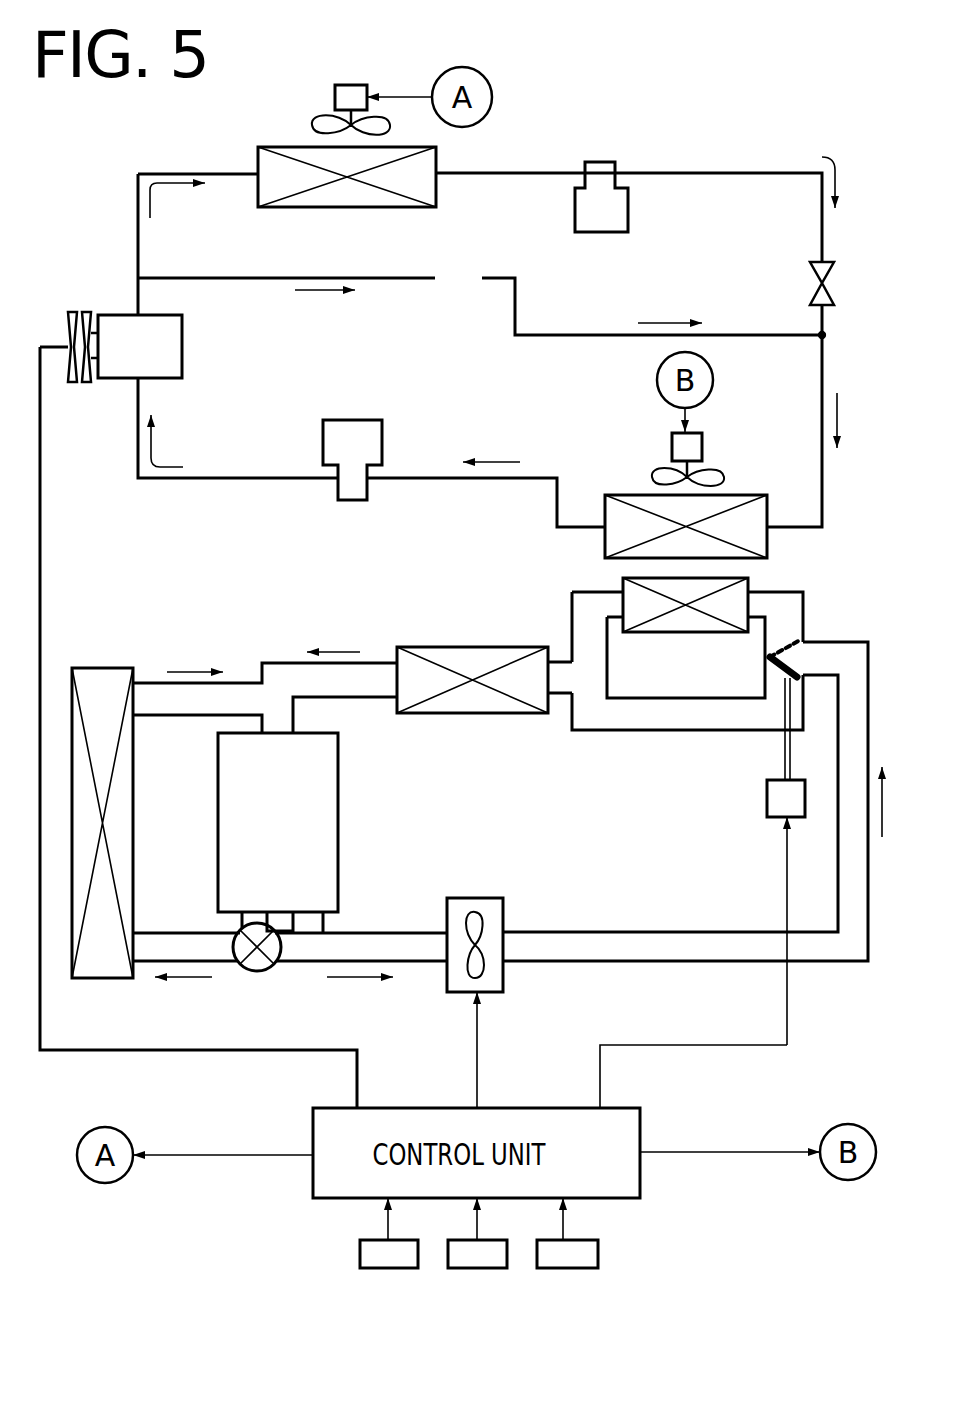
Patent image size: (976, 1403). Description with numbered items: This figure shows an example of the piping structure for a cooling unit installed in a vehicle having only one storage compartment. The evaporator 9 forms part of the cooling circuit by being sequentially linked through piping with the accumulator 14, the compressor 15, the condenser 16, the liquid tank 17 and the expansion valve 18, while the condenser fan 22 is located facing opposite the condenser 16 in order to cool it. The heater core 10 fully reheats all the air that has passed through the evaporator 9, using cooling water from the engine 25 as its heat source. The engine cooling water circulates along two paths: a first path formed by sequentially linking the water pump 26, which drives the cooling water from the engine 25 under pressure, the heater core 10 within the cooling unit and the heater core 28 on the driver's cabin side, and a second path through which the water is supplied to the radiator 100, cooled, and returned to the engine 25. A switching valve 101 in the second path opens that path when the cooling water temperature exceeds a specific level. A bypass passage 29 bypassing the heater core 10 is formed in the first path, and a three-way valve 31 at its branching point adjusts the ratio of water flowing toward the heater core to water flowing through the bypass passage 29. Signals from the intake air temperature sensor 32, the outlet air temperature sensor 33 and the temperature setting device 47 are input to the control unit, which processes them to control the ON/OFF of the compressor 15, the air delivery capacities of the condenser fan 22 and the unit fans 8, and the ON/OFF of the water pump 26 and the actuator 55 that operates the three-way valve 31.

The condenser fan 22 is at (345, 85).
The condenser 16 is at (436, 188).
The liquid tank 17 is at (628, 210).
The expansion valve 18 is at (810, 282).
The compressor 15 is at (178, 340).
The accumulator 14 is at (376, 445).
The unit fans 8 is at (702, 447).
The evaporator 9 is at (727, 497).
The heater core 10 is at (675, 633).
The bypass passage 29 is at (627, 731).
The 3-way valve 31 is at (768, 660).
The actuator 55 is at (767, 800).
The heater core 28 is at (472, 657).
The engine 25 is at (338, 828).
The radiator 100 is at (133, 850).
The switching valve 101 is at (255, 972).
The water pump 26 is at (475, 898).
The intake air temperature sensor 32 is at (395, 1270).
The outlet air temperature sensor 33 is at (477, 1270).
The temperature setting device 47 is at (568, 1270).